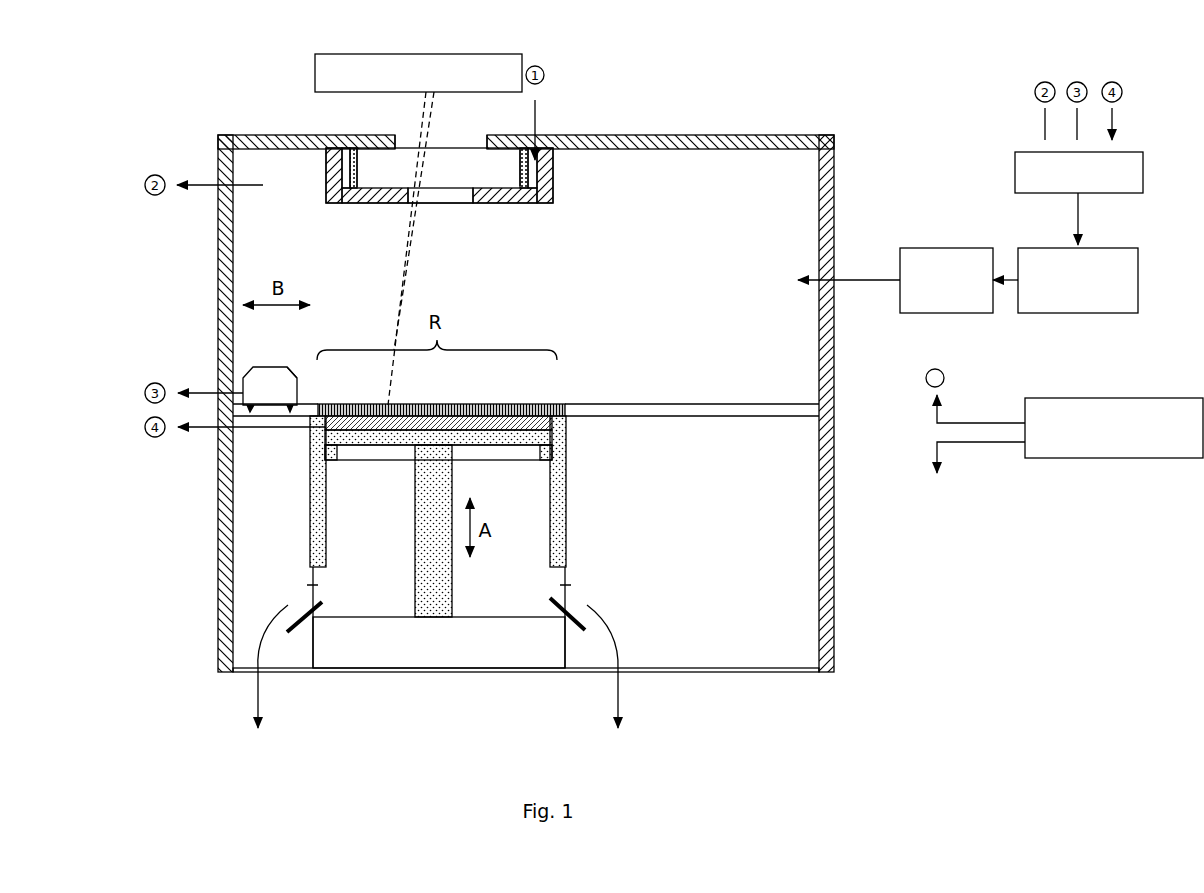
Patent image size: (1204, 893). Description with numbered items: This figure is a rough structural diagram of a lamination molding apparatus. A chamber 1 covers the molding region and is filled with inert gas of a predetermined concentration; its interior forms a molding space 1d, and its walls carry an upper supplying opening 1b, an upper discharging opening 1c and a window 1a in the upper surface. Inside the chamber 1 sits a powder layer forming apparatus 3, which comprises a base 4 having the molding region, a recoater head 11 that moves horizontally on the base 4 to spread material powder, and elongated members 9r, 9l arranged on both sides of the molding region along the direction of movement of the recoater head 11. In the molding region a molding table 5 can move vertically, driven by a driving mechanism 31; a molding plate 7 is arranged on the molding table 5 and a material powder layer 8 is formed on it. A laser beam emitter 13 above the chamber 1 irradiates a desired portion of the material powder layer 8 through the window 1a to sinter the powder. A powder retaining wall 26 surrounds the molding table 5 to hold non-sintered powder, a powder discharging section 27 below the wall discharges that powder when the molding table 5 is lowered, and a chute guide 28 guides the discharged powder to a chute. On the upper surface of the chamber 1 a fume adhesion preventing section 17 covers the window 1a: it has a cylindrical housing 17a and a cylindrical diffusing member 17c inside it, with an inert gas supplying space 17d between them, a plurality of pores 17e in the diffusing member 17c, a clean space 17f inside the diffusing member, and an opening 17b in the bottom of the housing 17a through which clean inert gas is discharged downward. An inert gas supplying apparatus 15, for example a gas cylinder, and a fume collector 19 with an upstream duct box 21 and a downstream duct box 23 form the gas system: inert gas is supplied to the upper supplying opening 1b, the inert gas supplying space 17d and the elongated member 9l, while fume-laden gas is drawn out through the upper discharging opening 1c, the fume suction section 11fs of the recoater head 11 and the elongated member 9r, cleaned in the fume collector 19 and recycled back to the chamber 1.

The chamber 1 is at (258, 135).
The window 1a is at (406, 137).
The upper supplying opening 1b is at (816, 288).
The upper discharging opening 1c is at (238, 198).
The molding space 1d is at (526, 276).
The powder layer forming apparatus 3 is at (602, 386).
The base 4 is at (760, 416).
The molding table 5 is at (545, 437).
The molding plate 7 is at (480, 428).
The material powder layer 8 is at (545, 421).
The elongated member 9r is at (488, 403).
The elongated member 9l is at (940, 474).
The recoater head 11 is at (263, 367).
The fume suction section 11fs is at (297, 383).
The laser beam emitter 13 is at (407, 283).
The inert gas supplying apparatus 15 is at (1064, 413).
The fume adhesion preventing section 17 is at (567, 216).
The housing 17a is at (553, 167).
The opening 17b is at (453, 208).
The diffusing member 17c is at (520, 170).
The inert gas supplying space 17d is at (535, 203).
The pores 17e is at (512, 162).
The clean space 17f is at (378, 177).
The fume collector 19 is at (1078, 280).
The duct box 21 is at (1079, 172).
The duct box 23 is at (946, 280).
The powder retaining wall 26 is at (310, 530).
The powder discharging section 27 is at (307, 585).
The chute guide 28 is at (297, 633).
The driving mechanism 31 is at (453, 593).